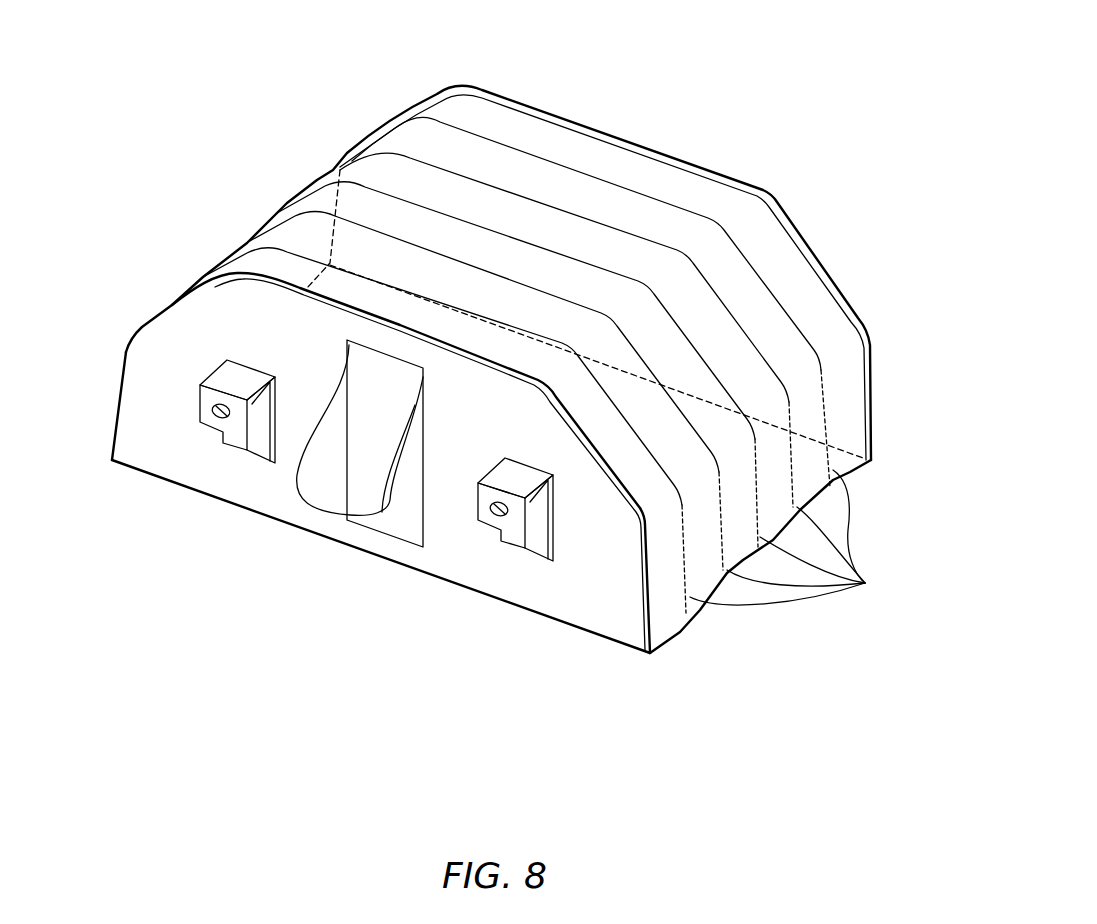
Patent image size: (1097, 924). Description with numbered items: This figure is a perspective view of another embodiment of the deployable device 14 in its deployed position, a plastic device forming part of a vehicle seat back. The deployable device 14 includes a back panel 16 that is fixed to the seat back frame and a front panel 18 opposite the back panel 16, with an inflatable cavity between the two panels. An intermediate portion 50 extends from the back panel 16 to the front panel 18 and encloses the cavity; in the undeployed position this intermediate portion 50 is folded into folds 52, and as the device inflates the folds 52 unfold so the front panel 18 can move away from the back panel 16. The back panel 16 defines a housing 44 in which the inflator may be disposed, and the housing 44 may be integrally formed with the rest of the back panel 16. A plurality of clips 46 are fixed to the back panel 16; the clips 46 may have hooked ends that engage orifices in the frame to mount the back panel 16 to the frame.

The deployable device 14 is at (682, 42).
The back panel 16 is at (175, 458).
The front panel 18 is at (667, 152).
The housing 44 is at (330, 480).
The clips 46 is at (240, 450).
The intermediate portion 50 is at (283, 203).
The folds 52 is at (865, 583).